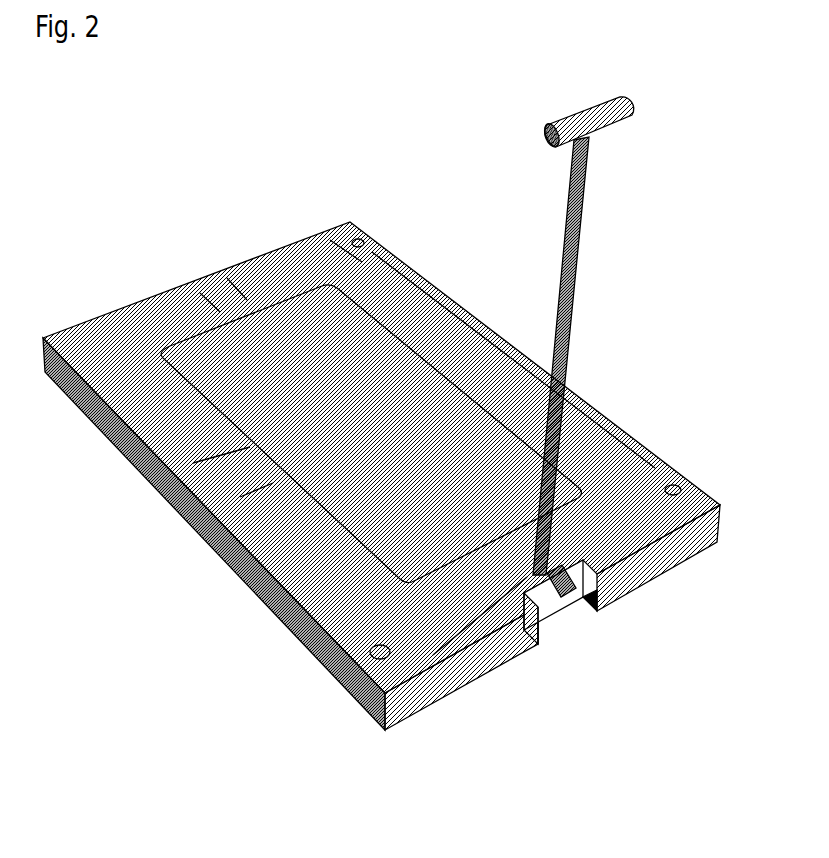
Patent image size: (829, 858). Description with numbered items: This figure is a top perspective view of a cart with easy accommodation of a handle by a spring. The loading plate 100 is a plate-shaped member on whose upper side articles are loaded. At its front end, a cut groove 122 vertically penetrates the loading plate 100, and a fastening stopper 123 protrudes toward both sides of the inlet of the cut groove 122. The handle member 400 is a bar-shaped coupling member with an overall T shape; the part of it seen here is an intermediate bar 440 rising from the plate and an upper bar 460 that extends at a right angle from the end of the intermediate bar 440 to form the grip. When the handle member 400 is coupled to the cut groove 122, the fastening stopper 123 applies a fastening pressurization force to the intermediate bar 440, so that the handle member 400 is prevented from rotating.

The loading plate 100 is at (164, 525).
The cut groove 122 is at (546, 592).
The fastening stopper 123 is at (563, 592).
The handle member 400 is at (641, 336).
The intermediate bar 440 is at (583, 226).
The upper bar 460 is at (623, 118).